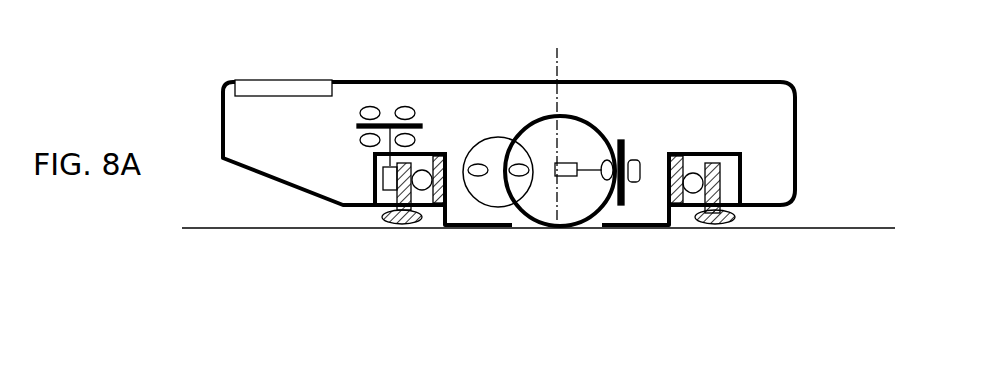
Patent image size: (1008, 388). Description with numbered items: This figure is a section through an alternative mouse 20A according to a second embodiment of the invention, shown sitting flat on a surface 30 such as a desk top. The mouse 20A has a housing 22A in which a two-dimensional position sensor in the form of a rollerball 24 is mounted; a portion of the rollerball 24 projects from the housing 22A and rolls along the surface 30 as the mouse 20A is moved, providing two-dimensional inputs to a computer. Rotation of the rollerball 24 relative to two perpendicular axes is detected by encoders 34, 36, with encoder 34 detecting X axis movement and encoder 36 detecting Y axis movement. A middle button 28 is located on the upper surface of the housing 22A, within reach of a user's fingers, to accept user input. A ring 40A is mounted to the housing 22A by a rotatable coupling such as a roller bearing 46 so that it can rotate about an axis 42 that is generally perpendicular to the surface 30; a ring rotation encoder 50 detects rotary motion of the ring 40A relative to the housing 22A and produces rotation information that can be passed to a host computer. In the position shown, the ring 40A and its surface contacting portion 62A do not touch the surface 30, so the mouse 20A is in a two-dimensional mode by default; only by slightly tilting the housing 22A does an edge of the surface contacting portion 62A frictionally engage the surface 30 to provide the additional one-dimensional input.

The mouse 20A is at (566, 119).
The housing 22A is at (733, 80).
The rollerball 24 is at (548, 188).
The middle button 28 is at (286, 81).
The surface 30 is at (827, 228).
The encoder 34 is at (632, 200).
The encoder 36 is at (482, 205).
The ring 40A is at (718, 198).
The axis 42 is at (558, 60).
The roller bearing 46 is at (693, 190).
The ring rotation encoder 50 is at (385, 103).
The surface contacting portion 62A is at (708, 220).